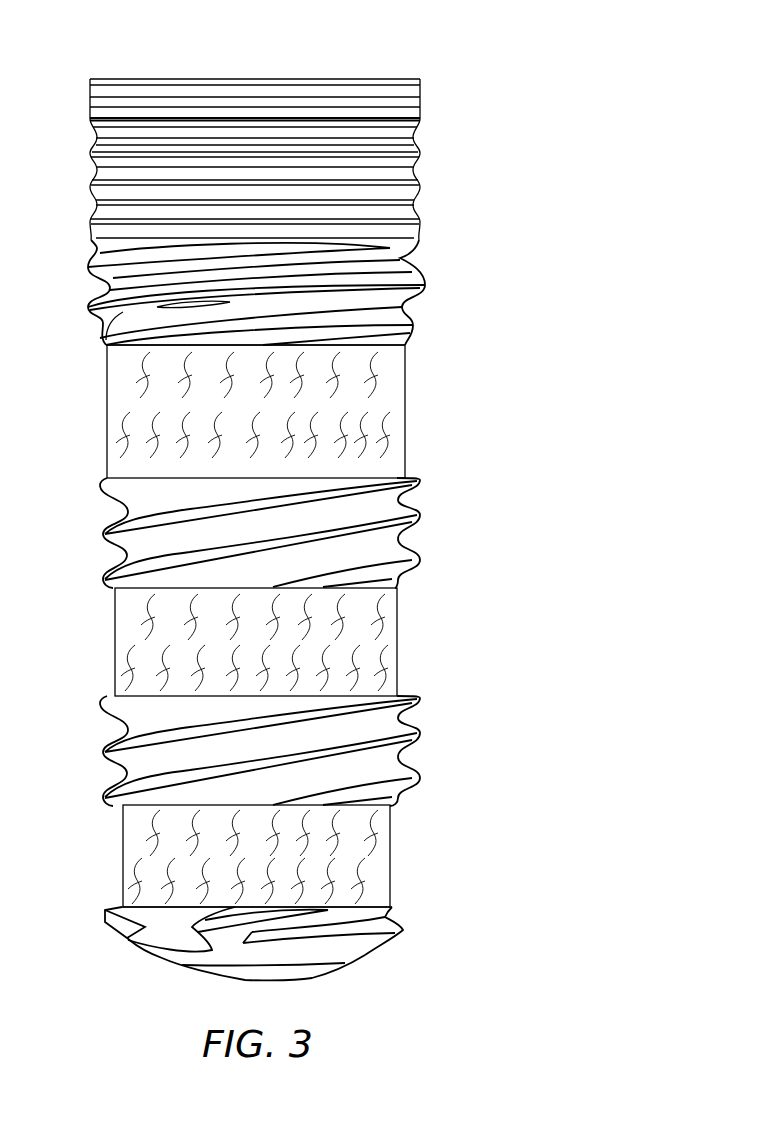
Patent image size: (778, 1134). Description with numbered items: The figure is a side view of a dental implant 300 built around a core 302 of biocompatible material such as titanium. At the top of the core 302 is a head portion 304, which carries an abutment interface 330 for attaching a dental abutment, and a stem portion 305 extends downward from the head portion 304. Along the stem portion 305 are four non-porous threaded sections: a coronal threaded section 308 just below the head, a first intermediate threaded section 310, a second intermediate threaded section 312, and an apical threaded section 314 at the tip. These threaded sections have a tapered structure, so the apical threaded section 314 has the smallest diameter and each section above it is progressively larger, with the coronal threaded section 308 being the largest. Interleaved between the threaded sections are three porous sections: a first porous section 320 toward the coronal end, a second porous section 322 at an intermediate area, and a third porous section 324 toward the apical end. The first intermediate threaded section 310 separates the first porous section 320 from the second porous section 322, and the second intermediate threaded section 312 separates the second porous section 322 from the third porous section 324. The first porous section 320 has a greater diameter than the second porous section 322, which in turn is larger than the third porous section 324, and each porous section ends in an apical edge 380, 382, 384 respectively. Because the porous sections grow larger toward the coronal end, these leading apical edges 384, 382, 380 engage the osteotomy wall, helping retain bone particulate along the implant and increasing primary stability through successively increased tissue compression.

The dental implant 300 is at (525, 300).
The core 302 is at (420, 238).
The head portion 304 is at (420, 98).
The stem portion 305 is at (498, 408).
The coronal threaded section 308 is at (95, 302).
The first intermediate threaded section 310 is at (103, 535).
The second intermediate threaded section 312 is at (103, 753).
The apical threaded section 314 is at (130, 937).
The first porous section 320 is at (105, 400).
The second porous section 322 is at (115, 645).
The third porous section 324 is at (123, 855).
The abutment interface 330 is at (273, 78).
The apical edge 380 is at (418, 485).
The apical edge 382 is at (400, 696).
The apical edge 384 is at (392, 900).